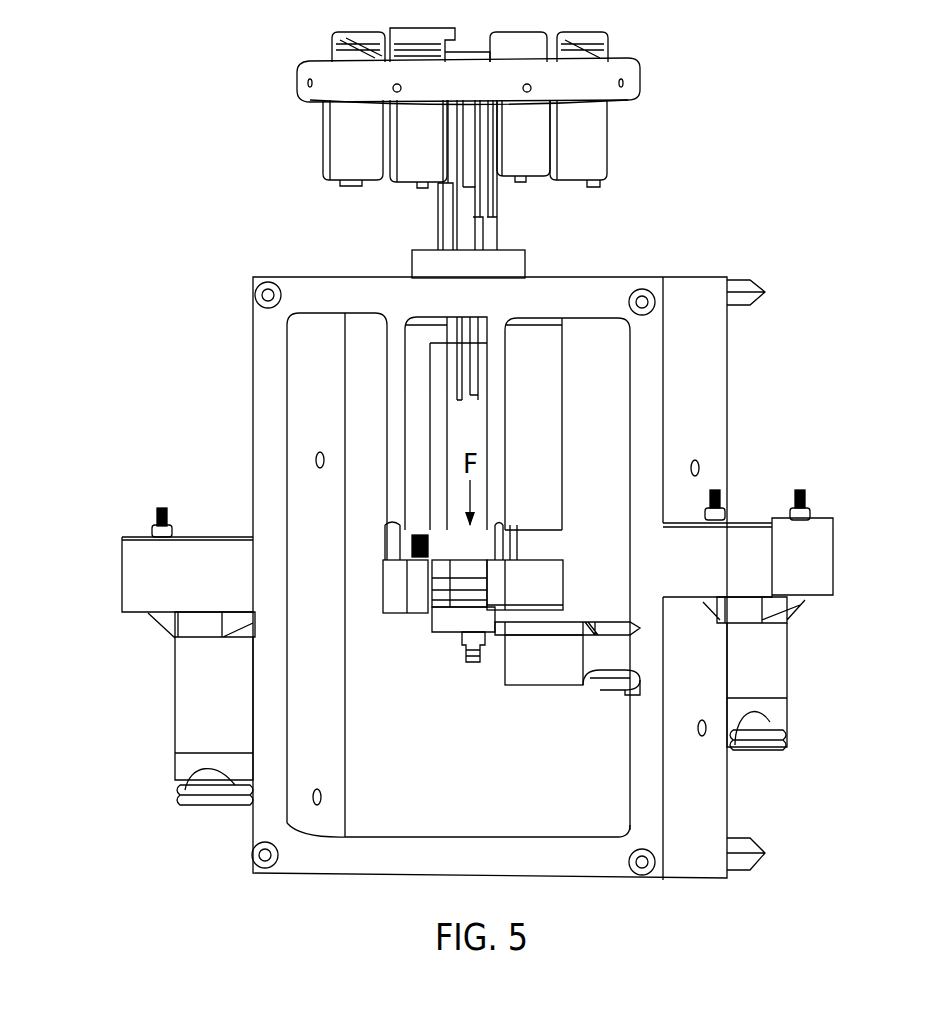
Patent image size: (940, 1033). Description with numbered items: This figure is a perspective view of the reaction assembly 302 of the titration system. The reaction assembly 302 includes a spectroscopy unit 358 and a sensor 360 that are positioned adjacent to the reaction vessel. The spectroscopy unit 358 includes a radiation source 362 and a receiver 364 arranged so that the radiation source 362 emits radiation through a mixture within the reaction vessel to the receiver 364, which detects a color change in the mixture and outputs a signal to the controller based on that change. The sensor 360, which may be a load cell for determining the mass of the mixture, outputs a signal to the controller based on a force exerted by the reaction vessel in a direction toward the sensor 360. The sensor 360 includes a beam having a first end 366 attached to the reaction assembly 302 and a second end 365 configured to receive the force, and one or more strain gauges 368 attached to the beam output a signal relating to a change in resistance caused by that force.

The reaction assembly 302 is at (818, 127).
The spectroscopy unit 358 is at (341, 505).
The sensor 360 is at (610, 558).
The radiation source 362 is at (417, 556).
The receiver 364 is at (537, 543).
The second end 365 is at (503, 633).
The first end 366 is at (637, 634).
The strain gauge 368 is at (587, 625).